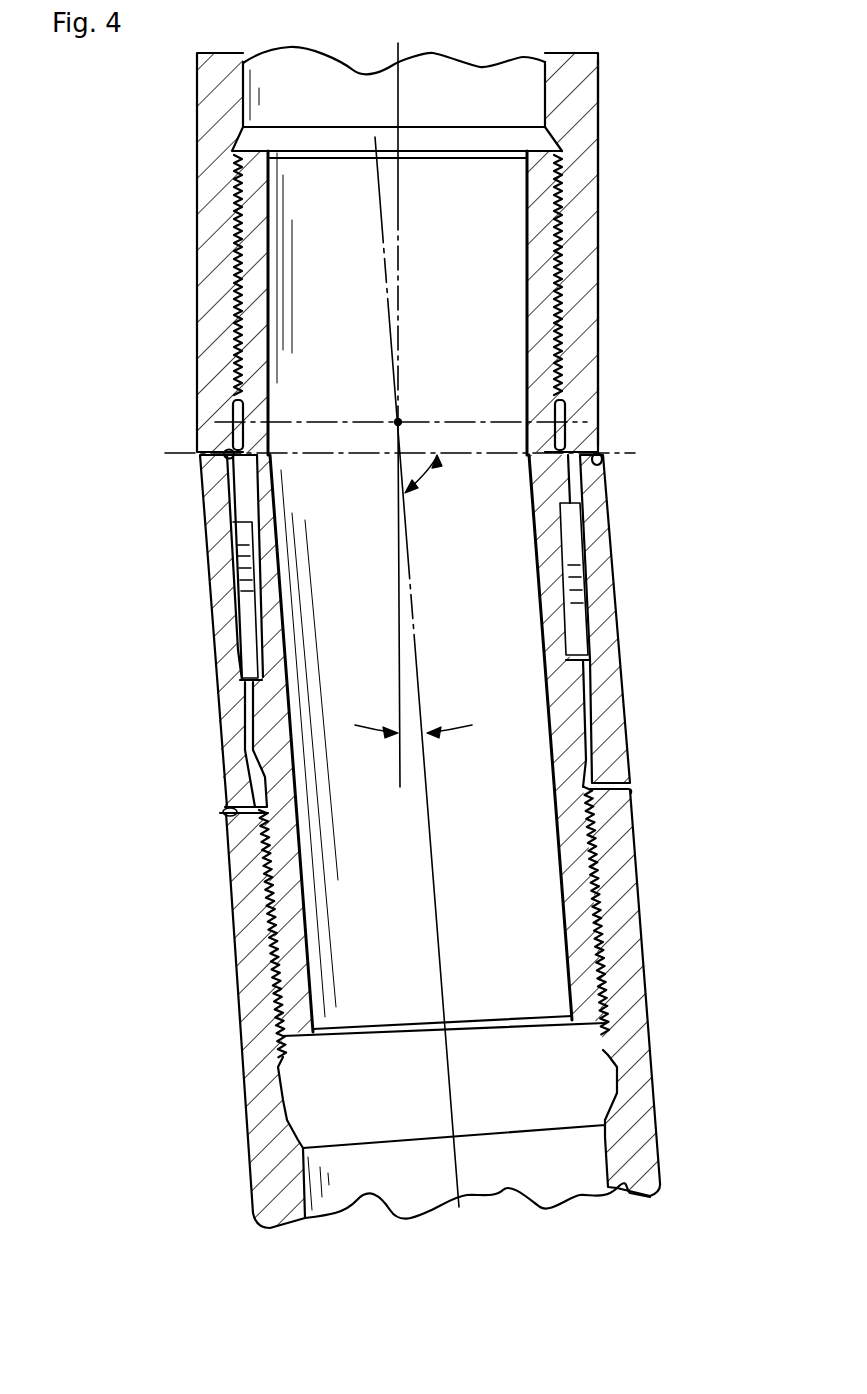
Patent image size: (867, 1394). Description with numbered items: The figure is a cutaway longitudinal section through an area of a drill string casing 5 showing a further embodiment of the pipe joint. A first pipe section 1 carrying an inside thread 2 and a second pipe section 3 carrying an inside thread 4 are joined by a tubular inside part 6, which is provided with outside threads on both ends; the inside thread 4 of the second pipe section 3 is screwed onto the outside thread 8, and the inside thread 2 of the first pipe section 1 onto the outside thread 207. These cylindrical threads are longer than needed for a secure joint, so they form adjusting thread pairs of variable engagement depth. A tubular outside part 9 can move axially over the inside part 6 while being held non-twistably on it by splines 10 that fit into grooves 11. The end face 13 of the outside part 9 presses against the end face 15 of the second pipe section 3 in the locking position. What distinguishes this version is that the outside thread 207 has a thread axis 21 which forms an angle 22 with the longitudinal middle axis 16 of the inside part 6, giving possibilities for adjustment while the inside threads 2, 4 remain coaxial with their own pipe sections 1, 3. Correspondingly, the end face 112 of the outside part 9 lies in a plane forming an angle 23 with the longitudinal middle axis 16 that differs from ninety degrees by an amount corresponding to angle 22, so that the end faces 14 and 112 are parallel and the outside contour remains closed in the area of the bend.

The first pipe section 1 is at (585, 168).
The inside thread 2 is at (558, 296).
The second pipe section 3 is at (637, 1013).
The inside thread 4 is at (598, 905).
The drill string casing 5 is at (600, 376).
The tubular inside part 6 is at (278, 562).
The outside thread 8 is at (275, 955).
The tubular outside part 9 is at (612, 682).
The splines 10 is at (577, 553).
The grooves 11 is at (228, 497).
The end face 13 is at (625, 777).
The end face 14 is at (225, 446).
The end face 15 is at (227, 828).
The longitudinal middle axis 16 is at (418, 650).
The thread axis 21 is at (398, 230).
The angle 22 is at (418, 720).
The angle 23 is at (434, 484).
The end face 112 is at (603, 466).
The outside thread 207 is at (239, 314).